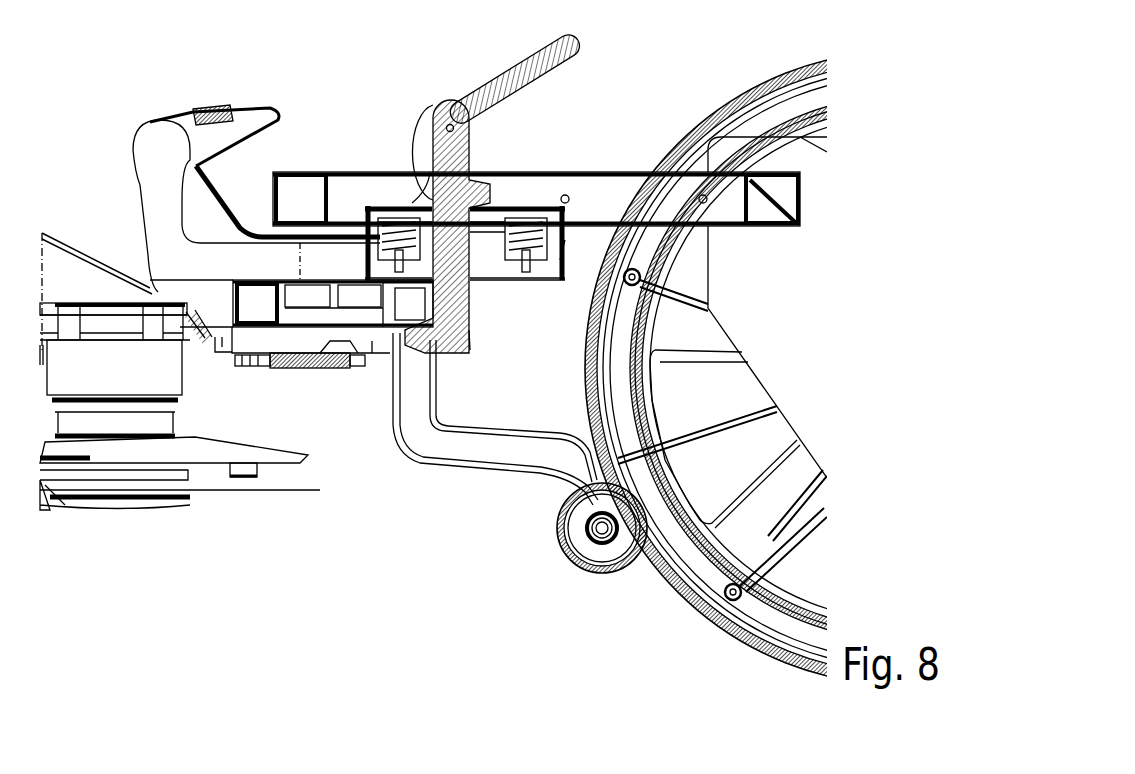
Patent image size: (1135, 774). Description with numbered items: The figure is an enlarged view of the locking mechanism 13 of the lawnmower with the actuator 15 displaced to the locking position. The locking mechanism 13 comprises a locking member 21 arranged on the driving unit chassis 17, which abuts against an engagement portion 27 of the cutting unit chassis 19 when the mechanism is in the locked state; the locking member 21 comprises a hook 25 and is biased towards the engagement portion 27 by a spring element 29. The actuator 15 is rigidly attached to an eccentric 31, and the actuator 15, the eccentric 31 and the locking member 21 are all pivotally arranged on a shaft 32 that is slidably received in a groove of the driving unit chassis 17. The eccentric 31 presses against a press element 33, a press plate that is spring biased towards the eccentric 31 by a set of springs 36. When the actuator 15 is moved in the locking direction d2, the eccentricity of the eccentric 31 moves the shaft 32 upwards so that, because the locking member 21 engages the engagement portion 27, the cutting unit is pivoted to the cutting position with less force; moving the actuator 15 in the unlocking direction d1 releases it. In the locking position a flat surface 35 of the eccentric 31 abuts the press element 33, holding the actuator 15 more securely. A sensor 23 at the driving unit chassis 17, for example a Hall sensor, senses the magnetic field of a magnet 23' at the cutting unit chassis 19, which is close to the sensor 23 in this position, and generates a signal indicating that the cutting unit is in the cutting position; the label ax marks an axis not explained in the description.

The locking mechanism 13 is at (336, 79).
The actuator 15 is at (537, 62).
The driving unit chassis 17 is at (657, 193).
The cutting unit chassis 19 is at (150, 290).
The locking member 21 is at (470, 337).
The sensor 23 is at (300, 379).
The magnet 23' is at (353, 401).
The hook 25 is at (432, 345).
The engagement portion 27 is at (395, 400).
The spring element 29 is at (455, 300).
The eccentric 31 is at (422, 160).
The shaft 32 is at (437, 117).
The press element 33 is at (545, 200).
The flat surface 35 is at (400, 190).
The set of springs 36 is at (570, 243).
The axis ax is at (160, 145).
The unlocking direction d1 is at (550, 8).
The locking direction d2 is at (600, 76).